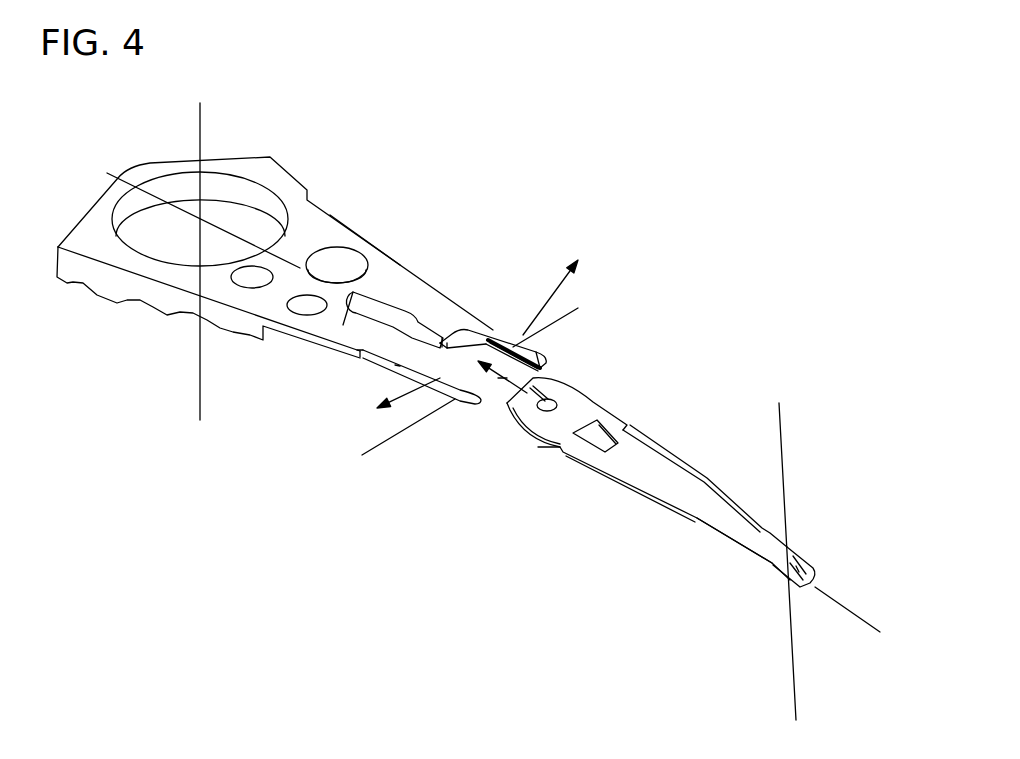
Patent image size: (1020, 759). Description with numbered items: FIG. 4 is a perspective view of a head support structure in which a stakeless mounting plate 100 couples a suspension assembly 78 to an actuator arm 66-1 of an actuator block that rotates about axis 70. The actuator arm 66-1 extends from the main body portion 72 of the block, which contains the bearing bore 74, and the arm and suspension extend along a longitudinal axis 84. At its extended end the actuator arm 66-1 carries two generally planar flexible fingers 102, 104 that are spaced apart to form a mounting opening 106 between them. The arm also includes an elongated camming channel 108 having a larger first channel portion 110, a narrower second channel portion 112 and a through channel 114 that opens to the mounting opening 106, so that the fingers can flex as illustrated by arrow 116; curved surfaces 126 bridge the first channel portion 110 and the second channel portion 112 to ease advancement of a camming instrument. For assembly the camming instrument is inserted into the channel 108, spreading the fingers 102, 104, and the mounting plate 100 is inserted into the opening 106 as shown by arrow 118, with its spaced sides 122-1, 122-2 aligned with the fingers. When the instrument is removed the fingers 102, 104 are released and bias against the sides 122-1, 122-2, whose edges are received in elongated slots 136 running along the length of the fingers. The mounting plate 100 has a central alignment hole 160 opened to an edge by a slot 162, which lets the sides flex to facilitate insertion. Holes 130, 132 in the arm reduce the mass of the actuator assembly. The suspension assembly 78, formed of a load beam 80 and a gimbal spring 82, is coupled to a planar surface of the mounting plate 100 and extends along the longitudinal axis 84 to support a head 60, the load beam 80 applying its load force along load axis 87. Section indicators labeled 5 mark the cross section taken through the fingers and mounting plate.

The axis 70 is at (200, 133).
The main body portion 72 is at (290, 187).
The bearing bore 74 is at (258, 203).
The hole 130 is at (352, 232).
The hole 132 is at (222, 293).
The actuator arm 66-1 is at (404, 257).
The elongated camming channel 108 is at (421, 293).
The flexible finger 102 is at (500, 336).
The curved surfaces 126 is at (458, 331).
The mounting opening 106 is at (505, 346).
The arrow 116 is at (525, 345).
The elongated slots 136 is at (540, 368).
The arrow 118 is at (507, 378).
The flexible finger 104 is at (420, 380).
The first channel portion 110 is at (343, 325).
The second channel portion 112 is at (357, 350).
The through channel 114 is at (395, 365).
The section line 5- 5 is at (389, 450).
The stakeless mounting plate 100 is at (575, 398).
The slot 162 is at (531, 398).
The central alignment hole 160 is at (545, 413).
The side 122-1 is at (597, 403).
The side 122-2 is at (538, 447).
The suspension assembly 78 is at (713, 462).
The load beam 80 is at (669, 490).
The load axis 87 is at (783, 437).
The head 60 is at (800, 528).
The gimbal spring 82 is at (792, 555).
The longitudinal axis 84 is at (838, 598).